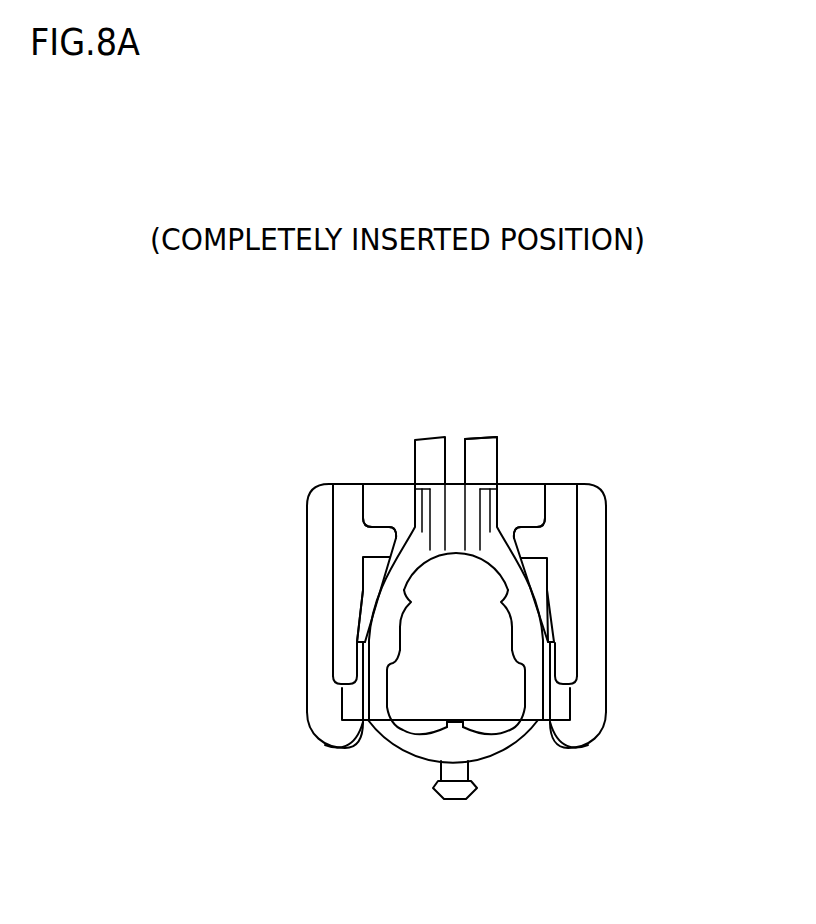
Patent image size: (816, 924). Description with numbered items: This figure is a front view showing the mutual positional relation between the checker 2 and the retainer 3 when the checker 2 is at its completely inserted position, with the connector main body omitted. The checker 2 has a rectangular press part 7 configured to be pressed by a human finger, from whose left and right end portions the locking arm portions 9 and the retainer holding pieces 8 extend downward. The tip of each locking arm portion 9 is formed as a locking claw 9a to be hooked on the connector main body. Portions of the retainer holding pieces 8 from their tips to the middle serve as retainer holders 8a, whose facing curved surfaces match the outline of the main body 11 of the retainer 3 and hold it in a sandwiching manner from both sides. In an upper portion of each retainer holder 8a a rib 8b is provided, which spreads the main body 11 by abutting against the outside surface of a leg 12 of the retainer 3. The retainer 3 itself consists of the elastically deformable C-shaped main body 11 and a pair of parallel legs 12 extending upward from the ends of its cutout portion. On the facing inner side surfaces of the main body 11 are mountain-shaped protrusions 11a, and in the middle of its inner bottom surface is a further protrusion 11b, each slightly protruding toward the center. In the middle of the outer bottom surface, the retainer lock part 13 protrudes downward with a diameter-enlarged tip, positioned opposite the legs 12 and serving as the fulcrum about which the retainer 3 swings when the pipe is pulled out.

The checker 2 is at (601, 478).
The retainer 3 is at (485, 425).
The press part 7 is at (400, 483).
The retainer holding piece 8 is at (343, 560).
The retainer holder 8a is at (355, 625).
The rib 8b is at (385, 533).
The locking arm portion 9 is at (316, 660).
The locking claw 9a is at (356, 735).
The main body 11 is at (560, 728).
The protrusion 11a is at (520, 628).
The protrusion 11b is at (462, 722).
The leg 12 is at (428, 436).
The retainer lock part 13 is at (478, 788).